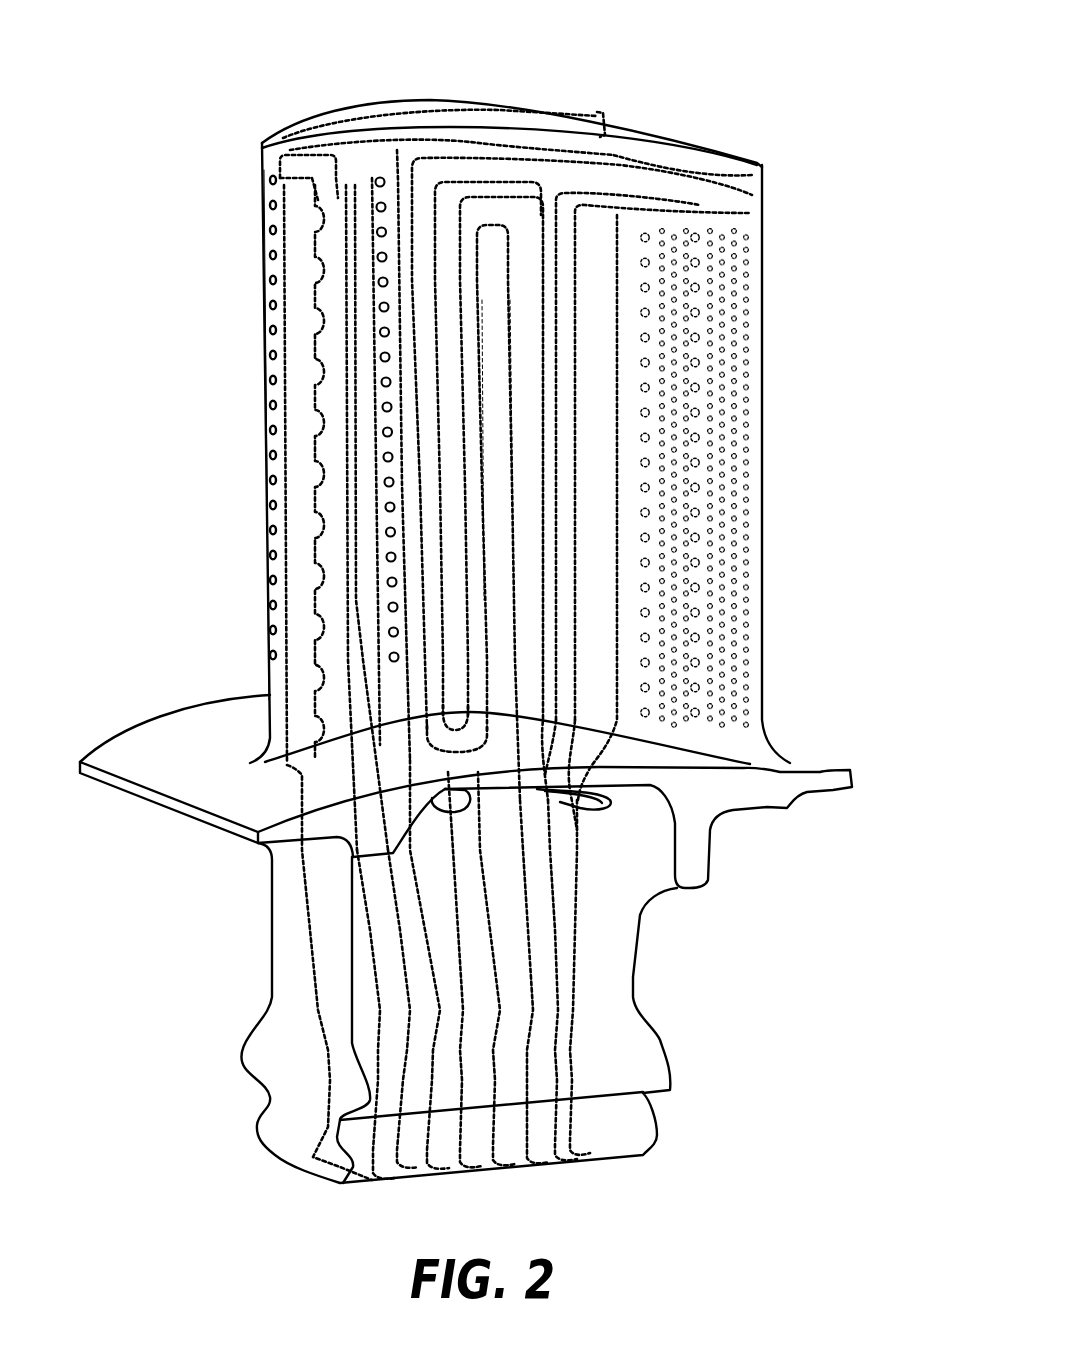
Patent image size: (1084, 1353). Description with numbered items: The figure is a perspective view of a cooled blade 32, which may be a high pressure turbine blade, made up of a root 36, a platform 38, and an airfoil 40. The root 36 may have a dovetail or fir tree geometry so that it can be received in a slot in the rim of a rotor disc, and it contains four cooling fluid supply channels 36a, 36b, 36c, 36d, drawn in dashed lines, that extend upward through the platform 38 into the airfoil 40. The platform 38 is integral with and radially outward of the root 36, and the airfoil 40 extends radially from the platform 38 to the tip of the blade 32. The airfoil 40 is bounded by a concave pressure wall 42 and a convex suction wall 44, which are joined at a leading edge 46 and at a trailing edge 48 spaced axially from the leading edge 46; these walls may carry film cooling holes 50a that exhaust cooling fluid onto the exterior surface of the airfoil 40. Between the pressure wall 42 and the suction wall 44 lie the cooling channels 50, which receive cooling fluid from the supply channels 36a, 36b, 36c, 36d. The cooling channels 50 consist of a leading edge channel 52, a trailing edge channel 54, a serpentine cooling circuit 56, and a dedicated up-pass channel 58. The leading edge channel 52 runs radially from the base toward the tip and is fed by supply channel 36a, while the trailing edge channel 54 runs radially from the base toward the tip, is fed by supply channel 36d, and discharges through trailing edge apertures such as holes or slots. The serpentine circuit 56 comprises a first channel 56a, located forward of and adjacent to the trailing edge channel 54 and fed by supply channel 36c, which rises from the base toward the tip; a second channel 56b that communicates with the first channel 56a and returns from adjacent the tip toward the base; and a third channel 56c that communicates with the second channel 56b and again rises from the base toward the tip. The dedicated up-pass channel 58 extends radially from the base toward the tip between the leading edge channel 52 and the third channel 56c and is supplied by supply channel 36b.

The cooled blade 32 is at (610, 100).
The root 36 is at (250, 929).
The cooling fluid supply channel 36a is at (393, 1003).
The cooling fluid supply channel 36b is at (452, 992).
The cooling fluid supply channel 36c is at (515, 1025).
The cooling fluid supply channel 36d is at (563, 1057).
The platform 38 is at (866, 764).
The airfoil 40 is at (782, 458).
The concave pressure wall 42 is at (614, 322).
The convex suction wall 44 is at (333, 322).
The leading edge 46 is at (265, 408).
The trailing edge 48 is at (768, 544).
The cooling channels 50 is at (530, 268).
The film cooling holes 50a is at (378, 283).
The leading edge channel 52 is at (335, 553).
The trailing edge channel 54 is at (597, 625).
The serpentine cooling circuit 56 is at (555, 258).
The first channel 56a is at (530, 410).
The second channel 56b is at (473, 498).
The third channel 56c is at (440, 597).
The dedicated up-pass channel 58 is at (357, 173).